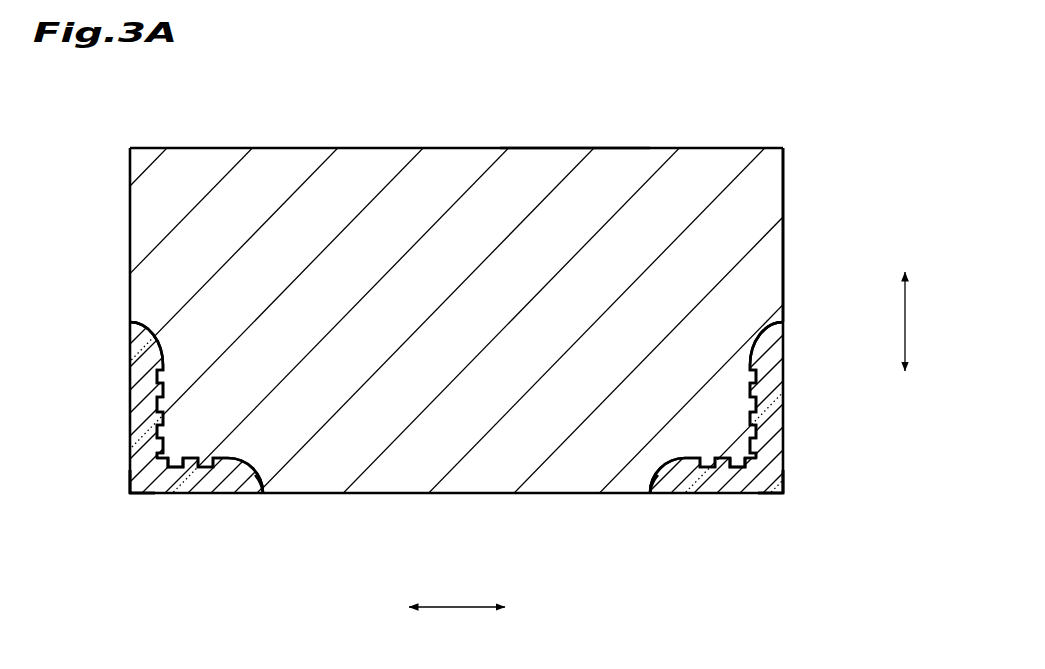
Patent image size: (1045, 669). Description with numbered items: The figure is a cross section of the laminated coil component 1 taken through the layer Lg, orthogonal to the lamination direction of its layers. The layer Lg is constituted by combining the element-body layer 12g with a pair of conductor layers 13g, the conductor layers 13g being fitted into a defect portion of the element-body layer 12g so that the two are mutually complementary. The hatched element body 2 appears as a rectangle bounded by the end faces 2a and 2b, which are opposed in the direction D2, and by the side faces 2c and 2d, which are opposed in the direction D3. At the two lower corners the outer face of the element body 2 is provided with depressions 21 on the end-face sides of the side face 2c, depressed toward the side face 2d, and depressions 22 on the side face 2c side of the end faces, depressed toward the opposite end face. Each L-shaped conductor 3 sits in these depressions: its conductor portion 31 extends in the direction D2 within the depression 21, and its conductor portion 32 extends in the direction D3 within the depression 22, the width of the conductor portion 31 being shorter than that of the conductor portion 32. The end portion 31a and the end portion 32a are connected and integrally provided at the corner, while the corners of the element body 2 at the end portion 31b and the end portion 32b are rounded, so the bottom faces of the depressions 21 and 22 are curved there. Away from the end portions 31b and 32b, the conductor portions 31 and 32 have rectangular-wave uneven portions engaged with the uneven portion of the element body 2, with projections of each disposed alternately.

The laminated coil component 1 is at (707, 116).
The element body 2 is at (522, 321).
The end face 2a is at (128, 274).
The end face 2b is at (785, 276).
The side face 2c is at (453, 495).
The side face 2d is at (468, 146).
The conductor 3 is at (489, 446).
The element-body layer 12g is at (785, 224).
The conductor layer 13g is at (178, 467).
The depression 21 is at (232, 470).
The depression 22 is at (159, 353).
The conductor portion 31 is at (159, 497).
The end portion 31a is at (127, 496).
The end portion 31b is at (266, 497).
The conductor portion 32 is at (126, 444).
The end portion 32a is at (456, 481).
The end portion 32b is at (126, 321).
The layer Lg is at (574, 134).
The direction D2 is at (457, 625).
The direction D3 is at (927, 321).